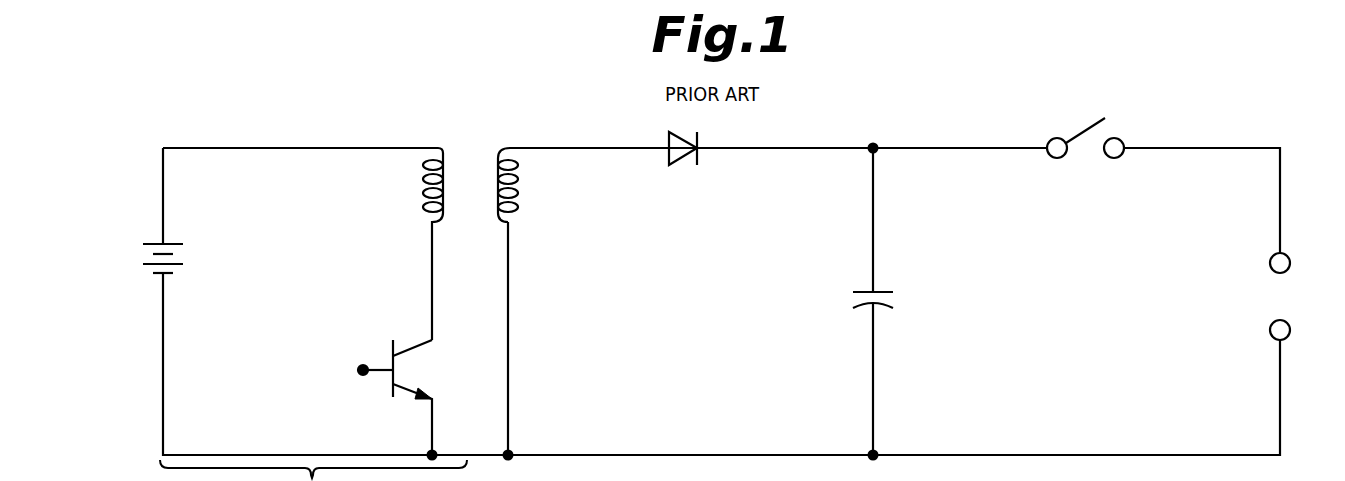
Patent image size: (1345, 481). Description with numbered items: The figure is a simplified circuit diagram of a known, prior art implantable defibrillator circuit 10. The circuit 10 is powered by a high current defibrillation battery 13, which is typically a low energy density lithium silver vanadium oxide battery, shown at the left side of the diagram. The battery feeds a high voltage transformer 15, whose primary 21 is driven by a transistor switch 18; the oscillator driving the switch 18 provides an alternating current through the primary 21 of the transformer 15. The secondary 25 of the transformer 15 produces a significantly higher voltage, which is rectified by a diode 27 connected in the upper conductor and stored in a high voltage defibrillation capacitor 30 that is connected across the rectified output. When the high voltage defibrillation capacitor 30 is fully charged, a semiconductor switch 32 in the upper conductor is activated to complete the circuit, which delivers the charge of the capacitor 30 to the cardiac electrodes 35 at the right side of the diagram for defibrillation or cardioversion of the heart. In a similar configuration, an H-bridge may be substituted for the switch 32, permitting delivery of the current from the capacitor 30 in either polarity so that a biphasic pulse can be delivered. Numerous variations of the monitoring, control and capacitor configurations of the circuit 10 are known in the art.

The implantable defibrillator circuit 10 is at (163, 178).
The high current defibrillation battery 13 is at (153, 264).
The high voltage transformer 15 is at (466, 228).
The transistor switch 18 is at (393, 390).
The primary 21 is at (424, 206).
The secondary 25 is at (518, 208).
The diode 27 is at (669, 136).
The high voltage defibrillation capacitor 30 is at (868, 292).
The semiconductor switch 32 is at (1085, 130).
The cardiac electrodes 35 is at (1285, 321).